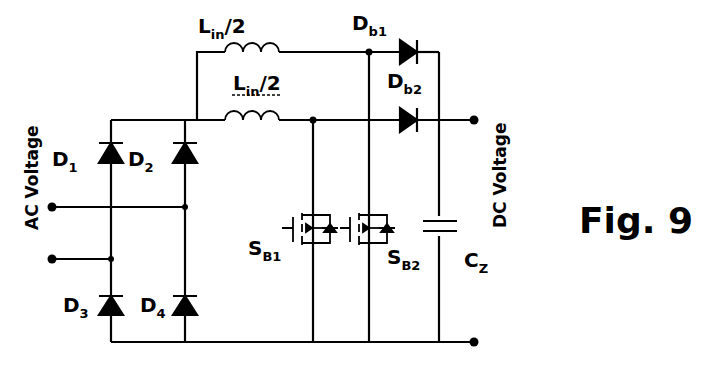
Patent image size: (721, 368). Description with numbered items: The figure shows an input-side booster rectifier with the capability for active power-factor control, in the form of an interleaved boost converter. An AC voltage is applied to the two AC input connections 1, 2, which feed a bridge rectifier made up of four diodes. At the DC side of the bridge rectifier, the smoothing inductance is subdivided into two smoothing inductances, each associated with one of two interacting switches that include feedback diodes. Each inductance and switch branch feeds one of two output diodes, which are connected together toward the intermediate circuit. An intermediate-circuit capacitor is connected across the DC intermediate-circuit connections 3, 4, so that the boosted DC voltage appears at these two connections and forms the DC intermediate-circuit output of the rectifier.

The AC input connection 1 is at (117, 197).
The AC input connection 2 is at (80, 272).
The DC intermediate-circuit connection 3 is at (480, 108).
The DC intermediate-circuit connection 4 is at (486, 344).